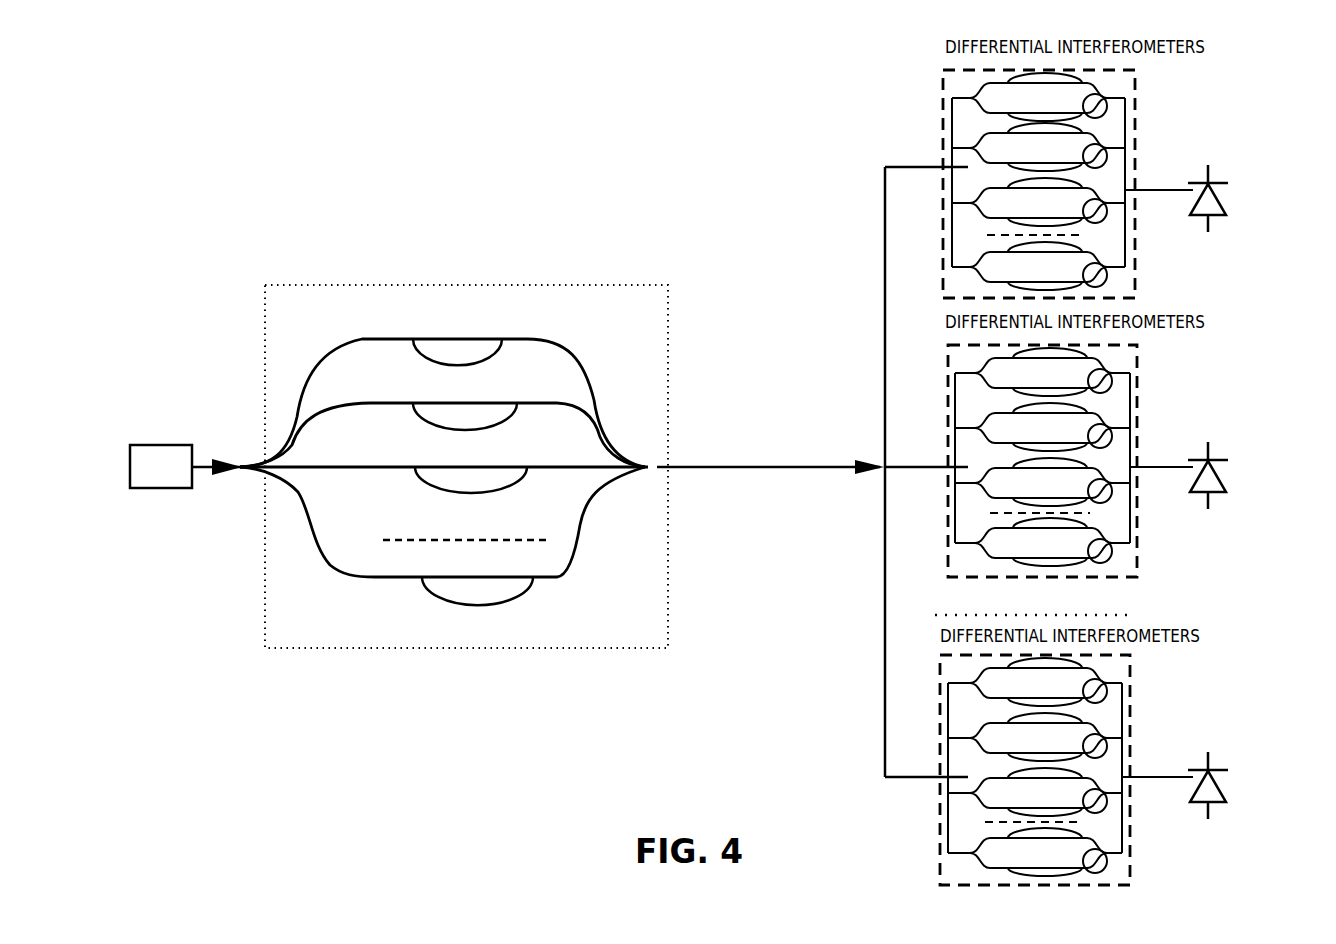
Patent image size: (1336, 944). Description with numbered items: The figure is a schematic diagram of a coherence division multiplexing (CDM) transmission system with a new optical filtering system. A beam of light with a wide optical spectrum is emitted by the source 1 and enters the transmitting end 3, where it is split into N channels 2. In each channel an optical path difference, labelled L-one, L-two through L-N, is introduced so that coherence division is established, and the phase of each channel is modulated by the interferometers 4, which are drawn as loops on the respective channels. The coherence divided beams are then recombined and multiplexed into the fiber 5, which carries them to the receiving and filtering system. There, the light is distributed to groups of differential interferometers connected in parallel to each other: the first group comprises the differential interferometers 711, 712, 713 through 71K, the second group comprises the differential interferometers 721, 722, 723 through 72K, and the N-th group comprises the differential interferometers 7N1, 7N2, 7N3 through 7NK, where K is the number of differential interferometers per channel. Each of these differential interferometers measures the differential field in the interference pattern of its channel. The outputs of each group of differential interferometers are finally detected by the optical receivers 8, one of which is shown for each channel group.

The source 1 is at (186, 450).
The channels 2 is at (337, 560).
The transmitting end 3 is at (466, 466).
The interferometers 4 is at (515, 593).
The fiber 5 is at (770, 464).
The optical receivers 8 is at (1215, 511).
The differential interferometer 711 is at (1038, 97).
The differential interferometer 712 is at (1038, 147).
The differential interferometer 713 is at (1038, 202).
The differential interferometer 71K is at (1038, 266).
The differential interferometer 721 is at (1042, 372).
The differential interferometer 722 is at (1042, 427).
The differential interferometer 723 is at (1042, 482).
The differential interferometer 72K is at (1042, 542).
The differential interferometer 7N1 is at (1035, 682).
The differential interferometer 7N2 is at (1035, 737).
The differential interferometer 7N3 is at (1035, 792).
The differential interferometer 7NK is at (1035, 852).